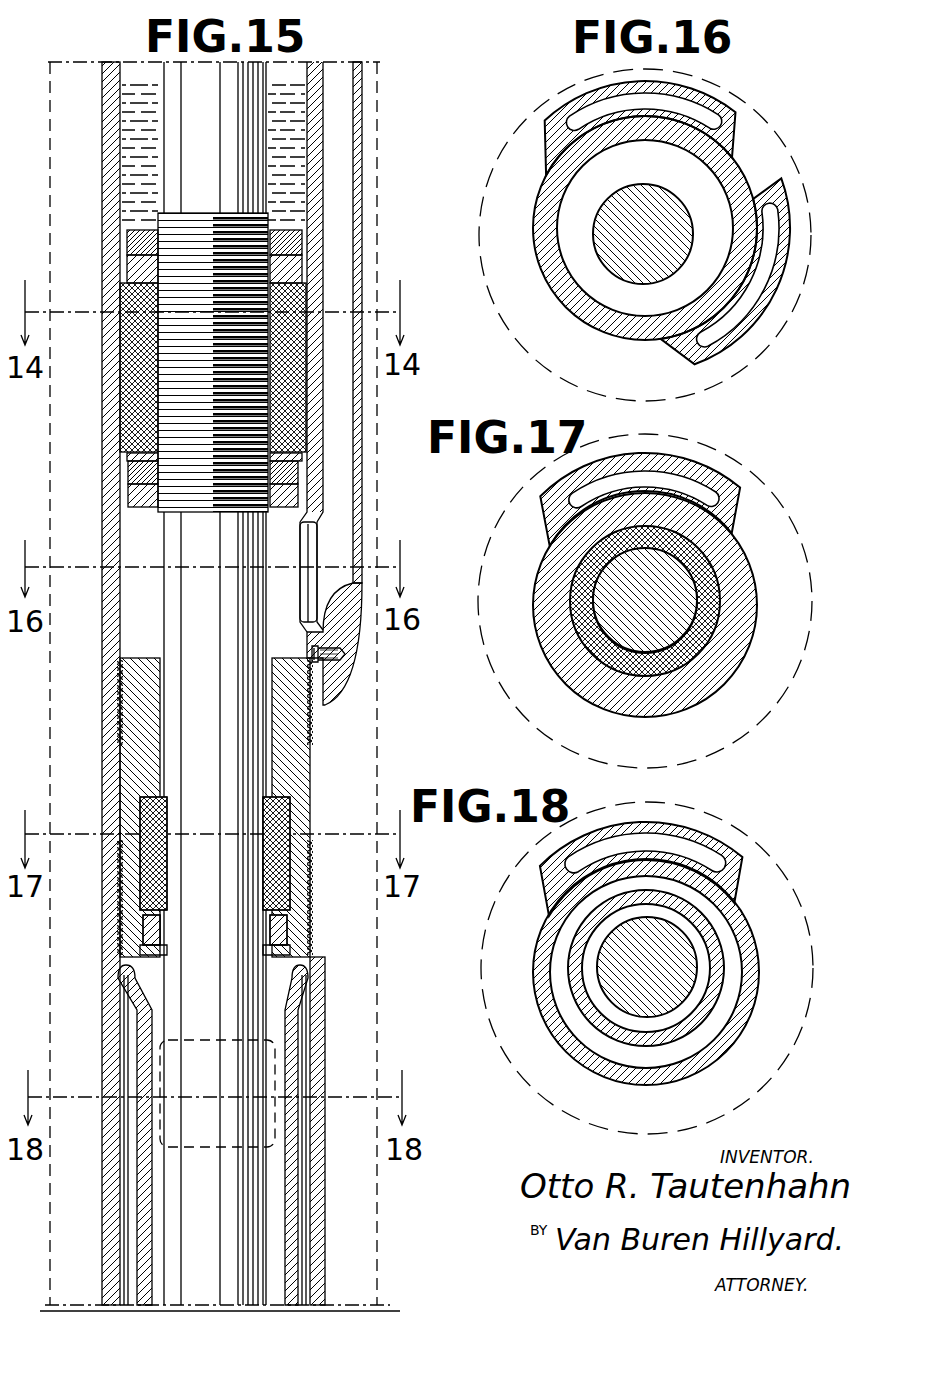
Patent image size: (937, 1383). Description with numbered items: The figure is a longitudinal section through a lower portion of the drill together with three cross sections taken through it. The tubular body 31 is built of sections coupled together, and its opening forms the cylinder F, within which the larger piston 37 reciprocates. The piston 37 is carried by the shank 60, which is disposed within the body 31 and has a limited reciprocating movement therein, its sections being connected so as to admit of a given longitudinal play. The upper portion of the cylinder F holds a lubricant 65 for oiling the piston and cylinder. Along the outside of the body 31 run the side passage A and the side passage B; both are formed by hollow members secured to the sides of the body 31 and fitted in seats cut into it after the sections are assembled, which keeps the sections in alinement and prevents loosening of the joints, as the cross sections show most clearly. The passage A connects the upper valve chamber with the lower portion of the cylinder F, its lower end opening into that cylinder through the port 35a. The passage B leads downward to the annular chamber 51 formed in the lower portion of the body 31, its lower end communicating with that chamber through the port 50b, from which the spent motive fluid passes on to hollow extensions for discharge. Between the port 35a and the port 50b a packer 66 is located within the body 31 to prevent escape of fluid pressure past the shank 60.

In FIG. 15, the body 31 is at (108, 232).
In FIG. 16, the body 31 is at (540, 222).
In FIG. 17, the body 31 is at (545, 592).
In FIG. 18, the body 31 is at (540, 978).
In FIG. 15, the piston 37 is at (130, 385).
In FIG. 15, the port 35a is at (312, 548).
In FIG. 16, the port 35a is at (742, 335).
In FIG. 15, the port 50b is at (285, 1062).
In FIG. 18, the port 50b is at (693, 860).
In FIG. 15, the annular chamber 51 is at (310, 985).
In FIG. 18, the annular chamber 51 is at (743, 950).
In FIG. 15, the shank 60 is at (188, 596).
In FIG. 16, the shank 60 is at (650, 192).
In FIG. 17, the shank 60 is at (620, 627).
In FIG. 18, the shank 60 is at (612, 992).
In FIG. 15, the lubricant 65 is at (135, 125).
In FIG. 15, the packer 66 is at (140, 820).
In FIG. 17, the packer 66 is at (580, 625).
In FIG. 15, the side passage A is at (345, 160).
In FIG. 16, the side passage A is at (760, 285).
In FIG. 16, the side passage B is at (700, 117).
In FIG. 17, the side passage B is at (692, 478).
In FIG. 18, the side passage B is at (700, 850).
In FIG. 15, the cylinder F is at (130, 540).
In FIG. 16, the cylinder F is at (598, 292).